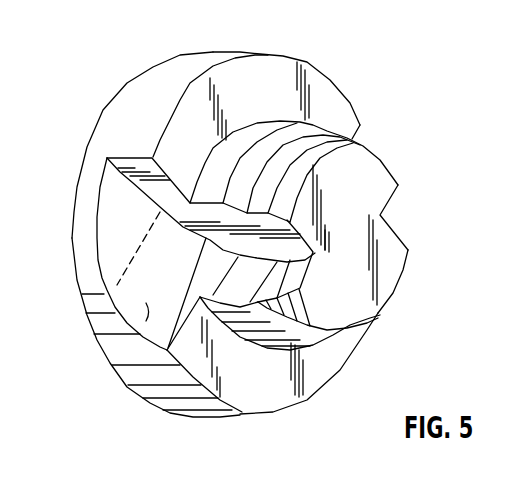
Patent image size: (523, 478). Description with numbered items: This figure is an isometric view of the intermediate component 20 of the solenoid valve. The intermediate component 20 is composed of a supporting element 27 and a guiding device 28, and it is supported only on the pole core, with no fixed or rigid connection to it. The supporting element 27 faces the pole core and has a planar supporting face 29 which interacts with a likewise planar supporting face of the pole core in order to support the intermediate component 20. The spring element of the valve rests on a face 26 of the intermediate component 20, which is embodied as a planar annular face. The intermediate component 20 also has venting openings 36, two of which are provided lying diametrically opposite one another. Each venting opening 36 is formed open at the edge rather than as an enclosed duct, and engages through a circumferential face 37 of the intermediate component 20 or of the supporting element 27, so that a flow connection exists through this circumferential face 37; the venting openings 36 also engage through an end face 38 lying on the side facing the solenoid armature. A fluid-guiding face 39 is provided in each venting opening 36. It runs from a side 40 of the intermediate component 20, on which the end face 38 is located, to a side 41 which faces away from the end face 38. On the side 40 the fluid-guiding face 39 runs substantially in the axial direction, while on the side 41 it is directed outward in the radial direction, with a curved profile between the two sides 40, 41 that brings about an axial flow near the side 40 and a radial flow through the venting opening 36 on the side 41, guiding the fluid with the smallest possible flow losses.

The intermediate component 20 is at (415, 152).
The face 26 is at (276, 76).
The supporting element 27 is at (193, 66).
The guiding device 28 is at (317, 147).
The supporting face 29 is at (72, 222).
The venting opening 36 is at (385, 213).
The circumferential face 37 is at (132, 107).
The end face 38 is at (392, 270).
The fluid-guiding face 39 is at (140, 273).
The side 40 is at (385, 318).
The side 41 is at (117, 382).